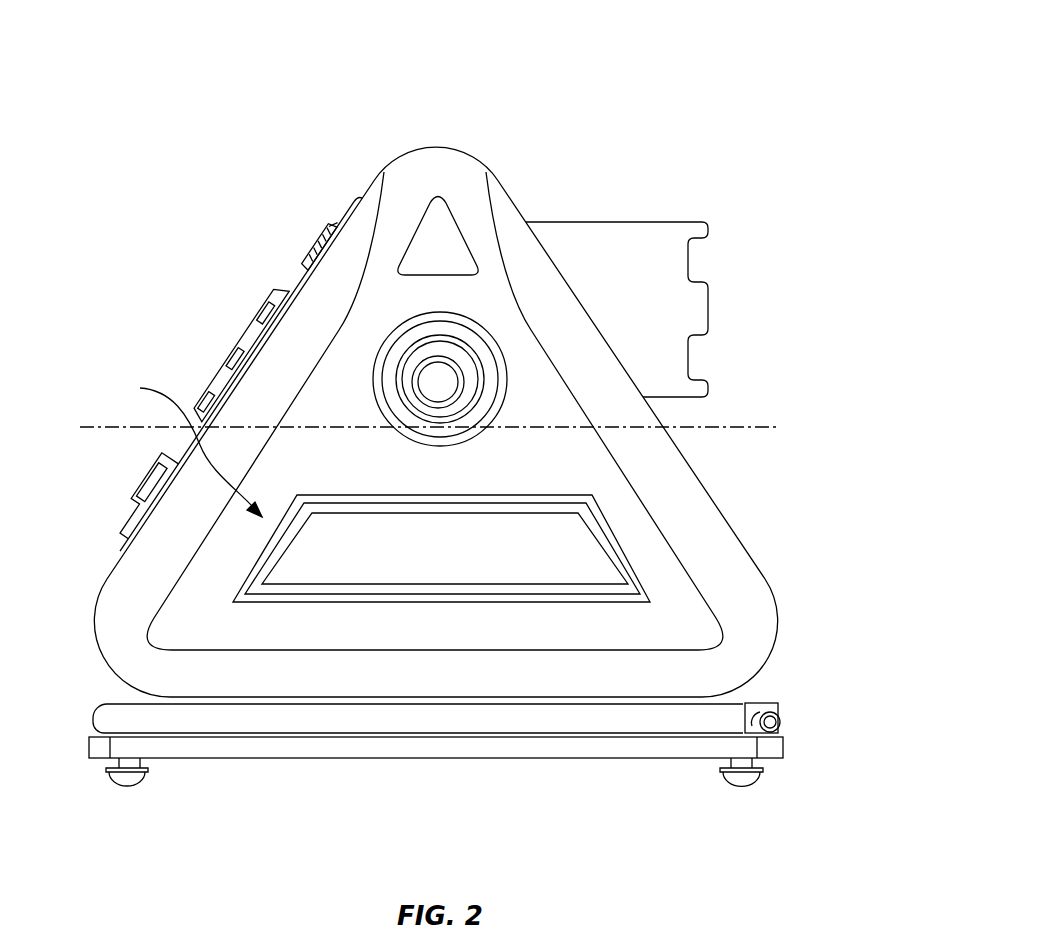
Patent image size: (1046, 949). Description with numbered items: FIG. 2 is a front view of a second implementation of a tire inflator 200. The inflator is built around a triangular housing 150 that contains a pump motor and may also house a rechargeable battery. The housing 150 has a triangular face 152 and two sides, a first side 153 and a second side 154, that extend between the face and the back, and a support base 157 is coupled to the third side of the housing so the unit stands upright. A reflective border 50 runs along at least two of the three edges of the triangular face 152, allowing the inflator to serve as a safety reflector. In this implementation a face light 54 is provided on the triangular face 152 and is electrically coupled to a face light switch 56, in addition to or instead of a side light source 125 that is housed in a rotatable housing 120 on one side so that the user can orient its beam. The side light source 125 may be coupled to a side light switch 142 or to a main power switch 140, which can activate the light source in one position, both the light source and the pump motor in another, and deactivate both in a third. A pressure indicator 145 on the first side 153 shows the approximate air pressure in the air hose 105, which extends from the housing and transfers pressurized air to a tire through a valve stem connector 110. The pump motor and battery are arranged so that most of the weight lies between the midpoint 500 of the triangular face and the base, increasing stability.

The tire inflator 200 is at (610, 88).
The reflective border 50 is at (132, 597).
The face light 54 is at (457, 385).
The face light switch 56 is at (440, 233).
The air hose 105 is at (217, 722).
The valve stem connector 110 is at (778, 722).
The rotatable housing 120 is at (612, 258).
The side light source 125 is at (698, 262).
The power switch 140 is at (322, 240).
The side light switch 142 is at (158, 478).
The pressure indicator 145 is at (235, 352).
The housing 150 is at (181, 445).
The triangular face 152 is at (370, 623).
The first side 153 is at (296, 287).
The second side 154 is at (726, 518).
The support base 157 is at (632, 748).
The midpoint 500 is at (752, 427).